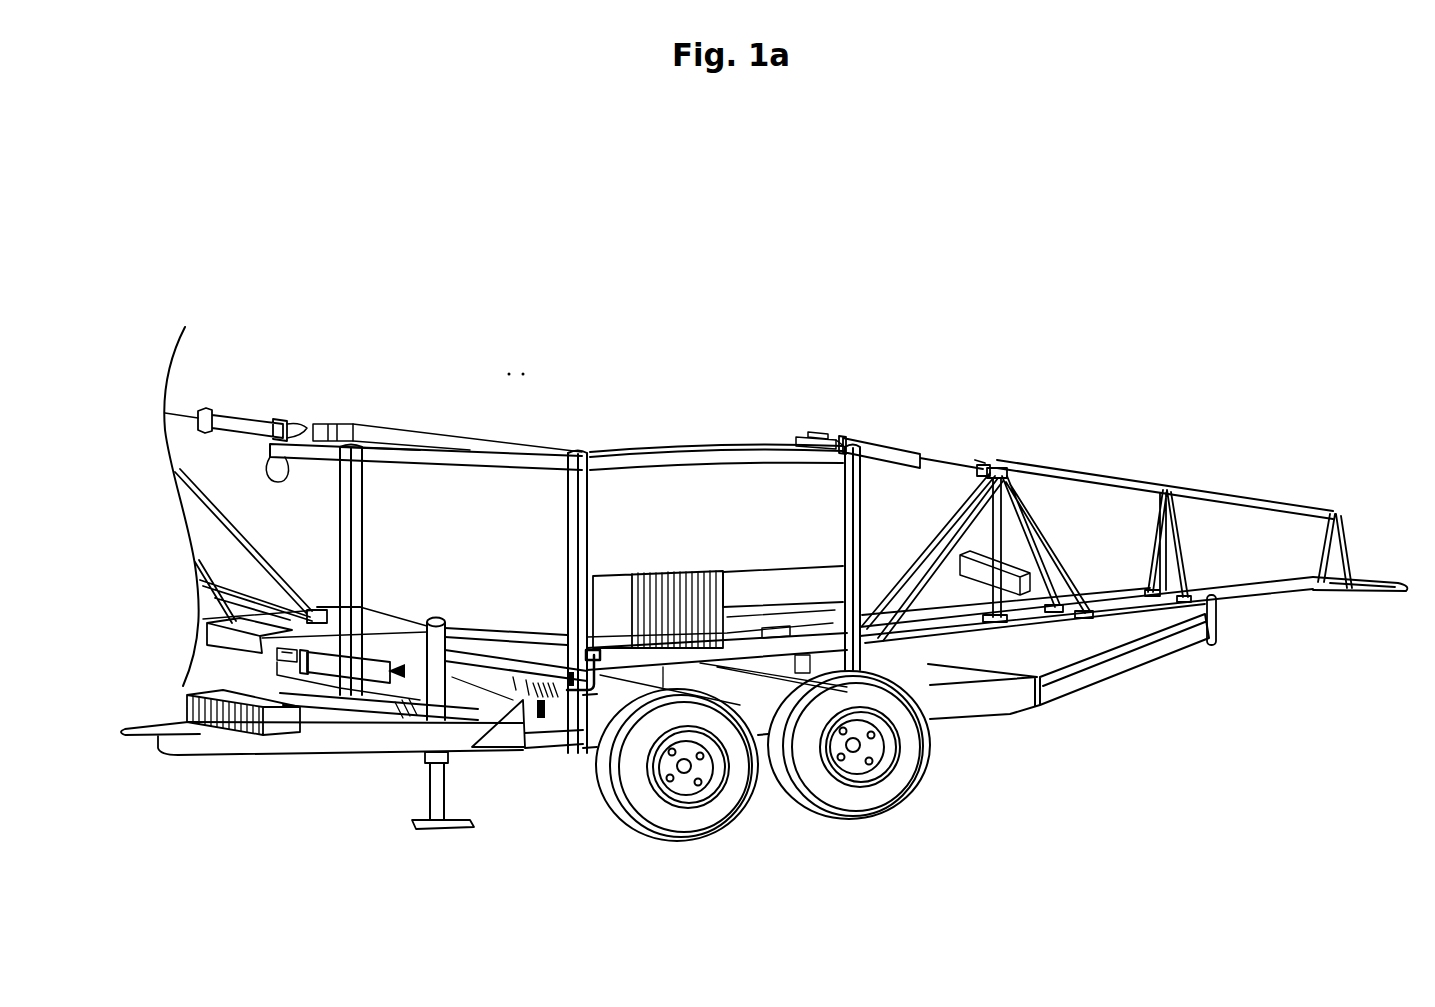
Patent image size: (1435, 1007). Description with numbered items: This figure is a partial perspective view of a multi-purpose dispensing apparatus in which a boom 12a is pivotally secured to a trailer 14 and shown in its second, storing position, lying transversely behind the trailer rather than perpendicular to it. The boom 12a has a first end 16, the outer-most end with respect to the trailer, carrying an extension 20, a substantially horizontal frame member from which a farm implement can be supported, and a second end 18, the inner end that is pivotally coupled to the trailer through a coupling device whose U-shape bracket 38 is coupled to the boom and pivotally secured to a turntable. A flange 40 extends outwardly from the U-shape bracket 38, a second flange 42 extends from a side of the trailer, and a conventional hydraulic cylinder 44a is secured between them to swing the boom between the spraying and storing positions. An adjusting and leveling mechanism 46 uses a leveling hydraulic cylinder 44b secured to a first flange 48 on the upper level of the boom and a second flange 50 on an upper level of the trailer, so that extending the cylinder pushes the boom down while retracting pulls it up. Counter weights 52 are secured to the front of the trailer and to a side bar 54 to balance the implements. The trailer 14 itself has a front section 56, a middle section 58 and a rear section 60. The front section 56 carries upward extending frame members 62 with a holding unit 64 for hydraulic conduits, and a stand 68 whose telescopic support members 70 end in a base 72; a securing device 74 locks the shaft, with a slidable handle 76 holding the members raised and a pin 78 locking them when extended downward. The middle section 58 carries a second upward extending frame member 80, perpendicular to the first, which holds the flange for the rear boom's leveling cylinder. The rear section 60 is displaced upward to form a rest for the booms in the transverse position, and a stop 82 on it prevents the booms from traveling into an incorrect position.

The boom 12a is at (1230, 500).
The trailer 14 is at (579, 765).
The first end 16 is at (1389, 608).
The second end 18 is at (303, 605).
The extension 20 is at (1395, 582).
The U-shape bracket 38 is at (205, 632).
The flange 40 is at (278, 656).
The second flange 42 is at (420, 668).
The hydraulic cylinder 44a is at (366, 652).
The hydraulic cylinder 44b is at (251, 418).
The adjusting and leveling mechanism 46 is at (839, 412).
The first flange 48 is at (1000, 463).
The second flange 50 is at (800, 440).
The counter weights 52 is at (718, 590).
The side bar 54 is at (830, 588).
The front section 56 is at (246, 815).
The middle section 58 is at (771, 802).
The rear section 60 is at (1145, 700).
The upward extending frame members 62 is at (518, 446).
The holding unit 64 is at (388, 456).
The stand 68 is at (462, 701).
The support members 70 is at (425, 758).
The base 72 is at (420, 823).
The securing device 74 is at (464, 608).
The handle 76 is at (548, 638).
The pin 78 is at (448, 757).
The second upward extending frame member 80 is at (698, 457).
The stop 82 is at (1218, 624).